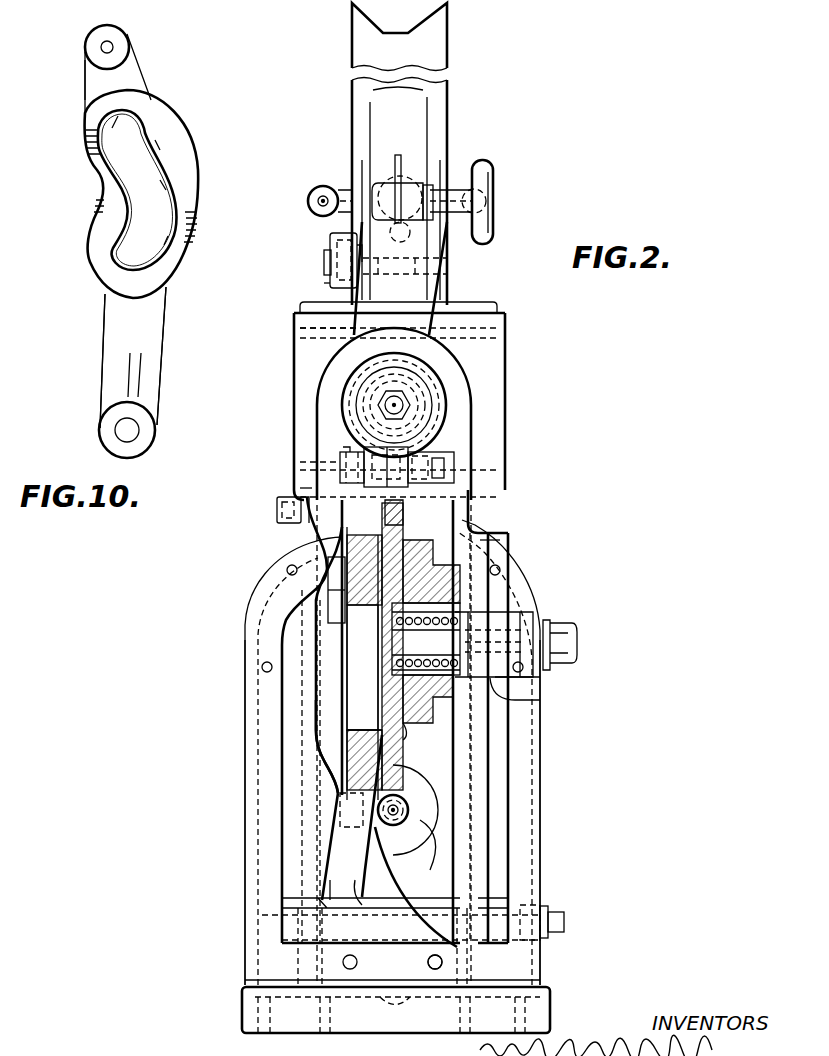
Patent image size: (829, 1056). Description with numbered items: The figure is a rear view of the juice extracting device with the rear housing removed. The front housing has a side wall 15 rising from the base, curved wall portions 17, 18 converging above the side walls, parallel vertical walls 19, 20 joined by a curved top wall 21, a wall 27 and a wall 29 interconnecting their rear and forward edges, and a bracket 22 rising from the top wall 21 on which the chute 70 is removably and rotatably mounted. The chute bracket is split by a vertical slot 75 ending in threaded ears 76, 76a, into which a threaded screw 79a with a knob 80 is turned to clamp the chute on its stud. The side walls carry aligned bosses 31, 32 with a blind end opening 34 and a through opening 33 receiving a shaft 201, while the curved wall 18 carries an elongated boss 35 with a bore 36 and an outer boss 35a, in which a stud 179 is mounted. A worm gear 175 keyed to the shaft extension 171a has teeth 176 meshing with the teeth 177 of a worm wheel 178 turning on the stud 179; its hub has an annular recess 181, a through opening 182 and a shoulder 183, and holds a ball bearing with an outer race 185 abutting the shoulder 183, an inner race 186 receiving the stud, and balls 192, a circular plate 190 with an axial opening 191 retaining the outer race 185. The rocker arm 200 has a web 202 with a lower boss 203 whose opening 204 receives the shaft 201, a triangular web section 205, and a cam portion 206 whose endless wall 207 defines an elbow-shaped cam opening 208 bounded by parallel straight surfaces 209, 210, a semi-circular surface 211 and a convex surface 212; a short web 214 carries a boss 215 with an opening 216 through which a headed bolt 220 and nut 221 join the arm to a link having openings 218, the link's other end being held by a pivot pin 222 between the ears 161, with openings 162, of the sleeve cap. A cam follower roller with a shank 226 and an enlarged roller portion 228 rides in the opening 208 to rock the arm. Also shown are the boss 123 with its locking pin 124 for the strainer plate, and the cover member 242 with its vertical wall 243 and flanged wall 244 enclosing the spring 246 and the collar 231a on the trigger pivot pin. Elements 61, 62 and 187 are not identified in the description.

In FIG. 2, the side wall 15 is at (245, 698).
In FIG. 2, the curved wall portion 17 is at (258, 582).
In FIG. 2, the curved wall portion 18 is at (502, 542).
In FIG. 2, the vertically extending wall 19 is at (312, 405).
In FIG. 2, the vertically extending wall 20 is at (452, 407).
In FIG. 2, the curved top wall 21 is at (432, 326).
In FIG. 2, the bracket 22 is at (420, 290).
In FIG. 2, the wall 27 is at (442, 392).
In FIG. 2, the wall 29 is at (505, 366).
In FIG. 2, the boss 31 is at (285, 900).
In FIG. 2, the boss 32 is at (525, 898).
In FIG. 2, the through opening 33 is at (560, 916).
In FIG. 2, the blind end opening 34 is at (250, 950).
In FIG. 2, the elongated boss 35 is at (500, 700).
In FIG. 2, the boss 35a is at (545, 676).
In FIG. 2, the bore 36 is at (540, 616).
In FIG. 2, the screw 61 is at (300, 490).
In FIG. 2, the bolt 62 is at (302, 336).
In FIG. 2, the chute 70 is at (452, 44).
In FIG. 2, the vertical slot 75 is at (403, 158).
In FIG. 2, the ear 76 is at (378, 192).
In FIG. 2, the ear 76a is at (428, 186).
In FIG. 2, the threaded screw 79a is at (480, 180).
In FIG. 2, the knob 80 is at (486, 195).
In FIG. 2, the boss 123 is at (305, 530).
In FIG. 2, the pin 124 is at (277, 518).
In FIG. 2, the ears 161 is at (430, 466).
In FIG. 2, the transverse openings 162 is at (455, 445).
In FIG. 2, the shaft extension 171a is at (400, 850).
In FIG. 2, the worm gear 175 is at (405, 826).
In FIG. 2, the teeth 176 is at (405, 800).
In FIG. 2, the teeth 177 is at (422, 560).
In FIG. 2, the worm wheel 178 is at (482, 532).
In FIG. 2, the stud 179 is at (578, 643).
In FIG. 2, the annular recess 181 is at (470, 582).
In FIG. 2, the through opening 182 is at (378, 626).
In FIG. 2, the shoulder 183 is at (345, 627).
In FIG. 2, the outer race 185 is at (384, 686).
In FIG. 2, the inner race 186 is at (426, 639).
In FIG. 2, the web 187 is at (378, 658).
In FIG. 2, the circular plate 190 is at (440, 720).
In FIG. 2, the axial opening 191 is at (476, 608).
In FIG. 2, the balls 192 is at (490, 540).
In FIG. 10, the rocker arm 200 is at (104, 332).
In FIG. 2, the rocker arm 200 is at (345, 830).
In FIG. 2, the shaft 201 is at (565, 925).
In FIG. 10, the web 202 is at (125, 307).
In FIG. 2, the web 202 is at (362, 900).
In FIG. 10, the boss 203 is at (110, 422).
In FIG. 2, the boss 203 is at (355, 885).
In FIG. 10, the through opening 204 is at (122, 438).
In FIG. 2, the through opening 204 is at (490, 948).
In FIG. 10, the web section 205 is at (128, 376).
In FIG. 2, the web section 205 is at (370, 848).
In FIG. 10, the cam portion 206 is at (80, 246).
In FIG. 2, the cam portion 206 is at (340, 735).
In FIG. 10, the endless wall 207 is at (146, 118).
In FIG. 10, the cam opening 208 is at (158, 181).
In FIG. 2, the cam opening 208 is at (350, 718).
In FIG. 10, the straight surface 209 is at (98, 152).
In FIG. 10, the straight surface 210 is at (156, 142).
In FIG. 10, the semi-circular surface 211 is at (116, 115).
In FIG. 10, the convex surface 212 is at (110, 173).
In FIG. 10, the short web 214 is at (107, 84).
In FIG. 2, the short web 214 is at (400, 510).
In FIG. 10, the boss 215 is at (106, 33).
In FIG. 10, the through opening 216 is at (99, 47).
In FIG. 2, the transverse openings 218 is at (344, 450).
In FIG. 2, the headed bolt 220 is at (440, 452).
In FIG. 2, the nut 221 is at (345, 462).
In FIG. 2, the pivot pin 222 is at (346, 476).
In FIG. 2, the shank 226 is at (330, 605).
In FIG. 2, the roller portion 228 is at (340, 565).
In FIG. 2, the collar 231a is at (405, 290).
In FIG. 2, the cover member 242 is at (318, 286).
In FIG. 2, the vertical wall 243 is at (330, 260).
In FIG. 2, the peripheral flanged wall 244 is at (330, 244).
In FIG. 2, the spring 246 is at (325, 270).